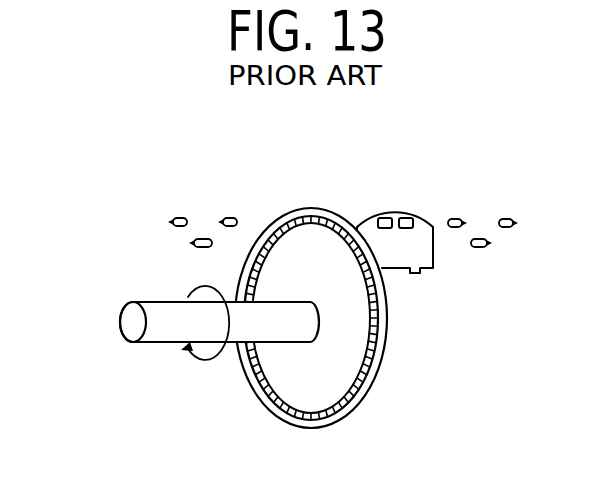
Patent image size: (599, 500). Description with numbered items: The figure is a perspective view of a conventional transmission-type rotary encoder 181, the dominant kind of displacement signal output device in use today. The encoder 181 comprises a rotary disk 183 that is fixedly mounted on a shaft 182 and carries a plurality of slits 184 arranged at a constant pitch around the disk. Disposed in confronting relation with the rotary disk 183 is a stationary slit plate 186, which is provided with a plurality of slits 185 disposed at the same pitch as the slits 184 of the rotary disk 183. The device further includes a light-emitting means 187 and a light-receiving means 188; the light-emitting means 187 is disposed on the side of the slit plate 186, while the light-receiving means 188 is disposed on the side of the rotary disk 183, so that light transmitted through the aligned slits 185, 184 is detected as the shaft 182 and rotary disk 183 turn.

The conventional rotary encoder 181 is at (152, 241).
The shaft 182 is at (163, 338).
The rotary disk 183 is at (372, 378).
The nozzle array 184 is at (310, 223).
The slits 185 is at (405, 218).
The stationary slit plate 186 is at (428, 262).
The light-emitting means 187 is at (506, 218).
The light-receiving means 188 is at (230, 217).